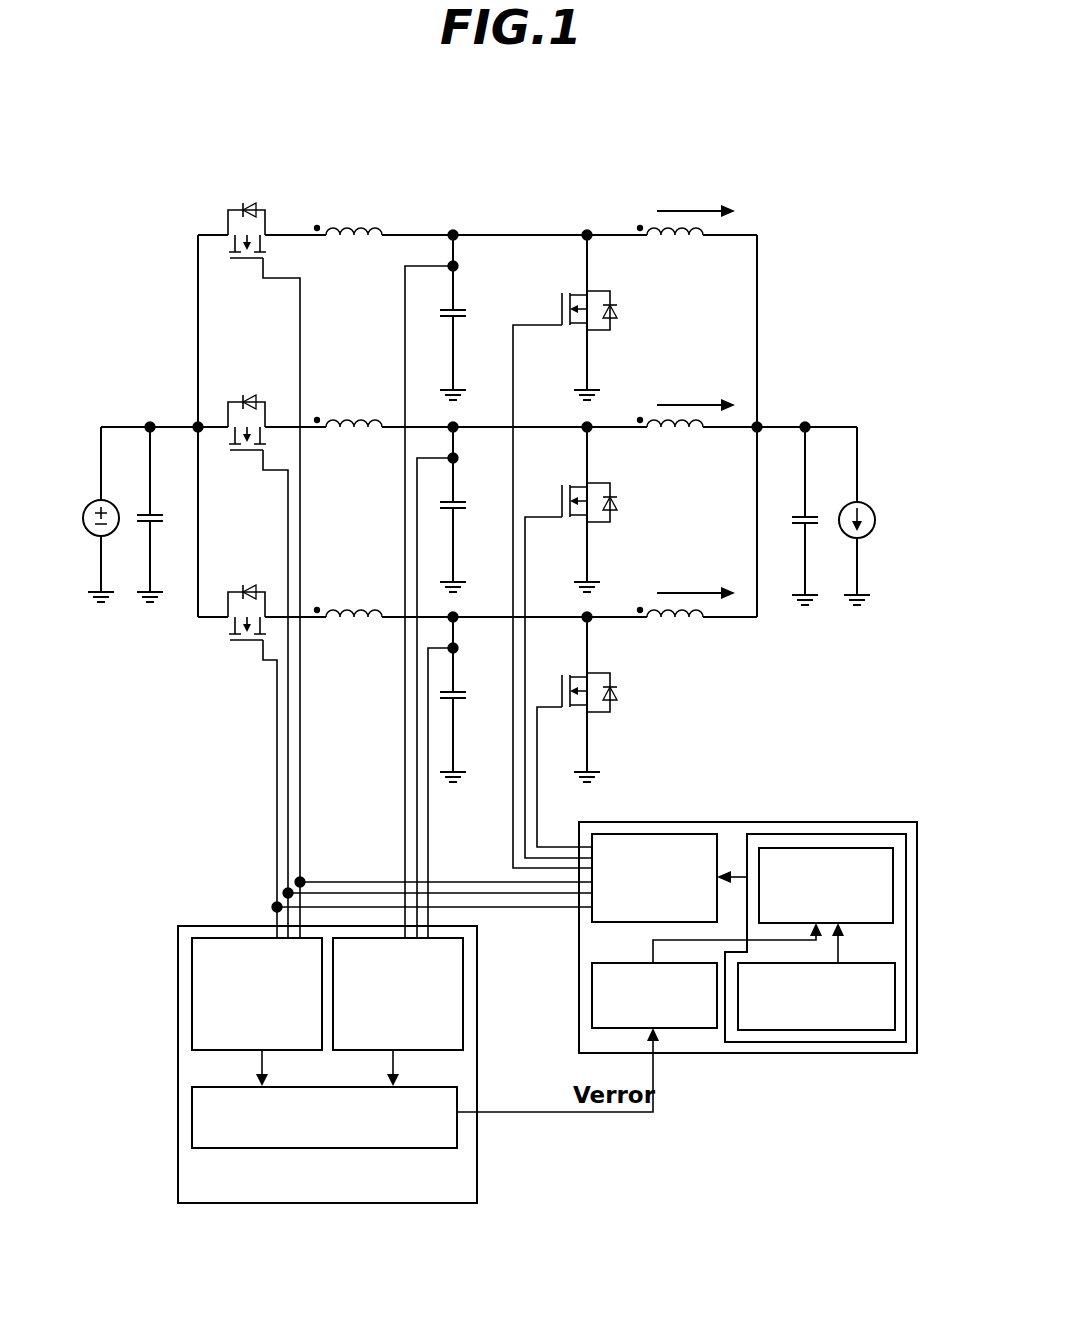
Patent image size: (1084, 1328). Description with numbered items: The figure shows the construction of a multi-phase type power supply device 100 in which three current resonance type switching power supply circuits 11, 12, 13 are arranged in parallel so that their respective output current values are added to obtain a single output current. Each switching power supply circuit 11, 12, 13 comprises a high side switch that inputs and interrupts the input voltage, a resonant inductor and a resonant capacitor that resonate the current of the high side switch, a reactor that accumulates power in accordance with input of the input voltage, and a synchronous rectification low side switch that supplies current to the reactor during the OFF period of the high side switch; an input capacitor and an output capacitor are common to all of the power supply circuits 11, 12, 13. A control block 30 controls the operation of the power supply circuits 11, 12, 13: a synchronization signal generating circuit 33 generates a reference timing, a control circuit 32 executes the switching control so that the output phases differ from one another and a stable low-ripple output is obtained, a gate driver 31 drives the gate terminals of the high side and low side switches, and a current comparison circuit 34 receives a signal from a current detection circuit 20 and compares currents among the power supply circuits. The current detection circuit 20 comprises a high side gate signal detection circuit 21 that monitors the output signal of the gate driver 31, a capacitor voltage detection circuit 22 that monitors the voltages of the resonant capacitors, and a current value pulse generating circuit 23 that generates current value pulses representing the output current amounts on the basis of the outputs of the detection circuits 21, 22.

The power supply device 100 is at (480, 185).
The switching power supply circuit 11 is at (770, 254).
The switching power supply circuit 12 is at (772, 444).
The switching power supply circuit 13 is at (752, 646).
The current detection circuit 20 is at (478, 1178).
The high side gate signal detection circuit 21 is at (205, 925).
The capacitor voltage detection circuit 22 is at (464, 968).
The current value pulse generating circuit 23 is at (458, 1097).
The control block 30 is at (898, 822).
The gate driver 31 is at (651, 835).
The control circuit 32 is at (823, 848).
The synchronization signal generating circuit 33 is at (830, 1043).
The current comparison circuit 34 is at (705, 1030).